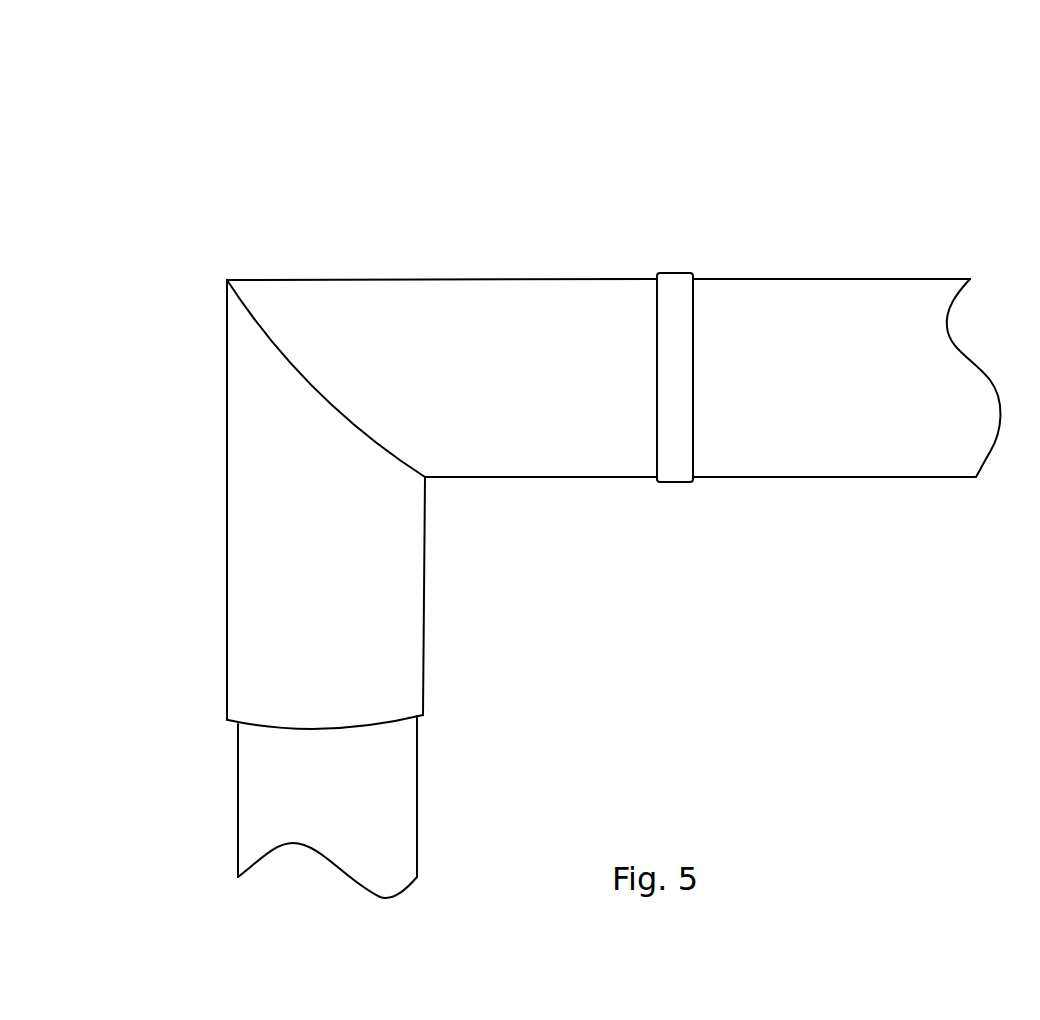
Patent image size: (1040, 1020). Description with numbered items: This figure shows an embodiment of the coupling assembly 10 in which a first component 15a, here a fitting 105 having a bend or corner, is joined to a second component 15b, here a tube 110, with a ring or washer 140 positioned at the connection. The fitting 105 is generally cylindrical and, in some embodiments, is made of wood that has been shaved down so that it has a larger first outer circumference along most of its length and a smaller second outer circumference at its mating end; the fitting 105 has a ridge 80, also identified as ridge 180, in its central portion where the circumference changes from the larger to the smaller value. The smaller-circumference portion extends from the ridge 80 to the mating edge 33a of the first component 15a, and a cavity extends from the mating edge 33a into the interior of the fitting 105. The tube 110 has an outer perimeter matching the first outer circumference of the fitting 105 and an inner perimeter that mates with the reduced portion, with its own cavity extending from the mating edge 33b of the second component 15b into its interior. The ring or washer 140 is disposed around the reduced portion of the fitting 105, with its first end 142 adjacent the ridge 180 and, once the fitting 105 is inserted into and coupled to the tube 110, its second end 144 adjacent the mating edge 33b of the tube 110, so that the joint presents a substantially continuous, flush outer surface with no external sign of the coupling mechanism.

The tubular assembly 10 is at (968, 213).
The fitting 105 is at (287, 297).
The first component 15a is at (497, 307).
The second component 15b is at (744, 297).
The tube 110 is at (793, 318).
The ring or washer 140 is at (677, 337).
The first end of the ring or washer 142 is at (657, 363).
The second end of the ring or washer 144 is at (693, 362).
The mating edge of the first component 33a is at (656, 418).
The mating edge of the second component 33b is at (693, 427).
The ridge 80 is at (420, 718).
The ridge 180 is at (232, 726).